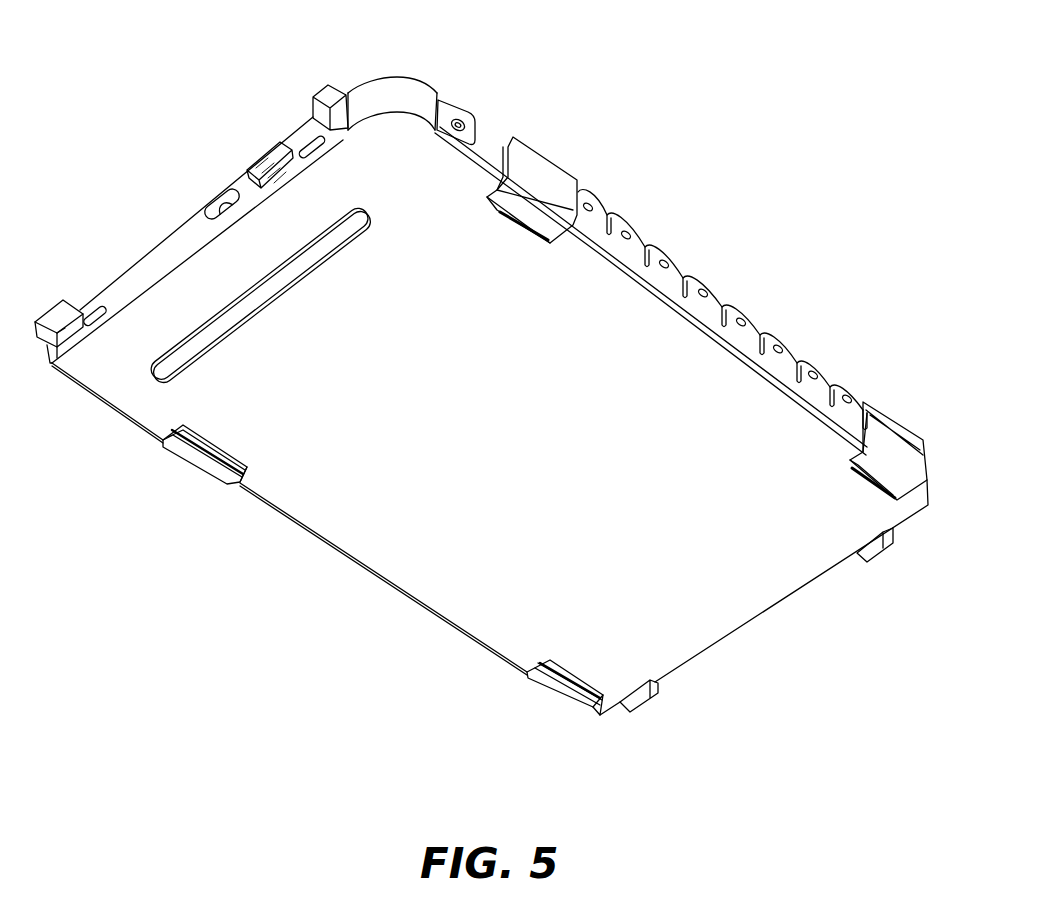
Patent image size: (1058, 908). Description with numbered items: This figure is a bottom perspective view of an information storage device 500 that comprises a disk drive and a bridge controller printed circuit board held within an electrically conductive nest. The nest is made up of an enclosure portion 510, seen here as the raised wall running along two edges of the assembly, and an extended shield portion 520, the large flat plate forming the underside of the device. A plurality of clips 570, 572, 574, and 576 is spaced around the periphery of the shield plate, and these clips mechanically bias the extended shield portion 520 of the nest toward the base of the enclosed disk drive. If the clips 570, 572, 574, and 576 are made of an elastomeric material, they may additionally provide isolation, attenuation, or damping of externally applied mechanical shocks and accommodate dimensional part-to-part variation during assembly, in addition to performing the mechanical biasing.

The information storage device 500 is at (242, 78).
The enclosure portion 510 is at (165, 257).
The extended shield portion 520 is at (600, 473).
The clip 570 is at (536, 185).
The clip 572 is at (892, 450).
The clip 574 is at (551, 686).
The clip 576 is at (195, 462).